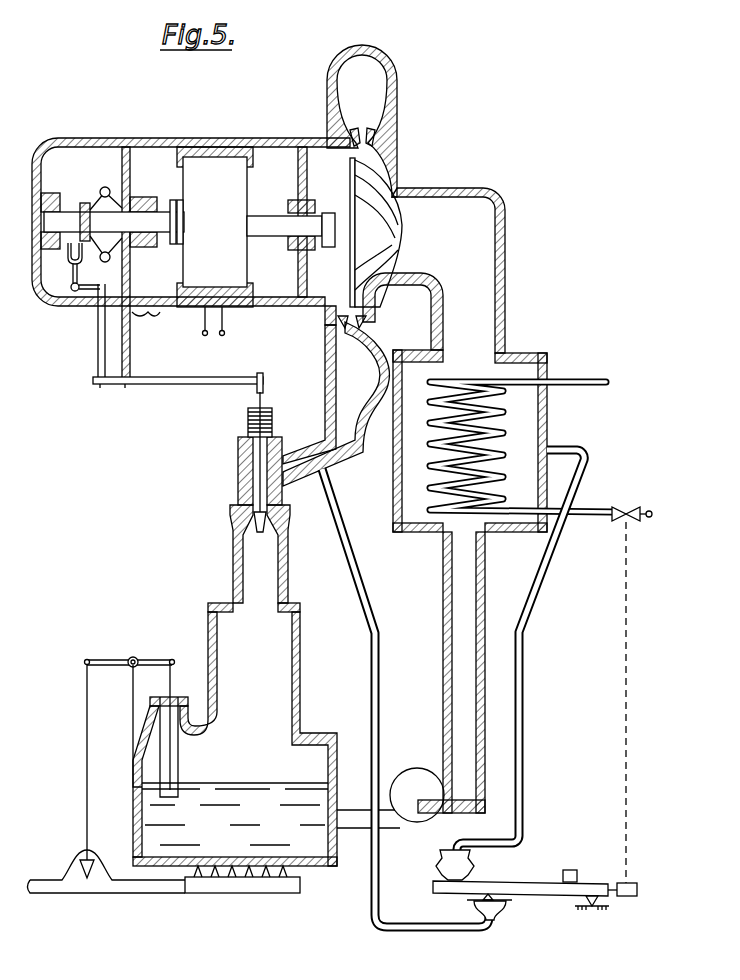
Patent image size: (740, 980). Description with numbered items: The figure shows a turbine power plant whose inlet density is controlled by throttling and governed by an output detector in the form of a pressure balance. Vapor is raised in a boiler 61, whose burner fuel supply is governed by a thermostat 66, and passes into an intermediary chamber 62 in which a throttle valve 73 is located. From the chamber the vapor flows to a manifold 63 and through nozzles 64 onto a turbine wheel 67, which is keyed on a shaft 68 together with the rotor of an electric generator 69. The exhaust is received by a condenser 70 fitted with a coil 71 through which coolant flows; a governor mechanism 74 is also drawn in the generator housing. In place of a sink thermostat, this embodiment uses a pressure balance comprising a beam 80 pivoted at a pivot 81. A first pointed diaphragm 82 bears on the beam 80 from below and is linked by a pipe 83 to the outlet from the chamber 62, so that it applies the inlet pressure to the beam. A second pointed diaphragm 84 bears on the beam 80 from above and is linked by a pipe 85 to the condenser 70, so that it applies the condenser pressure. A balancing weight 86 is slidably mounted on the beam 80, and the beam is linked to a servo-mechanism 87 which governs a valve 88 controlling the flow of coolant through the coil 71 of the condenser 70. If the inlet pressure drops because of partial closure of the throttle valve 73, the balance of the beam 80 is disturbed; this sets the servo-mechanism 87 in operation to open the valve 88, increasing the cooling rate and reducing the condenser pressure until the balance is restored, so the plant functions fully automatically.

The boiler 61 is at (300, 697).
The intermediary chamber 62 is at (284, 497).
The manifold 63 is at (336, 404).
The nozzles 64 is at (372, 141).
The thermostat 66 is at (174, 667).
The turbine wheel 67 is at (375, 232).
The shaft 68 is at (273, 222).
The electric generator 69 is at (205, 174).
The condenser 70 is at (532, 358).
The coil 71 is at (445, 388).
The throttle valve 73 is at (253, 490).
The governor 74 is at (77, 205).
The beam 80 is at (505, 880).
The pivot 81 is at (592, 907).
The first pointed diaphragm 82 is at (490, 916).
The pipe 83 is at (379, 856).
The second pointed diaphragm 84 is at (445, 866).
The pipe 85 is at (520, 726).
The balancing weight 86 is at (577, 878).
The servo-mechanism 87 is at (630, 884).
The valve 88 is at (616, 519).